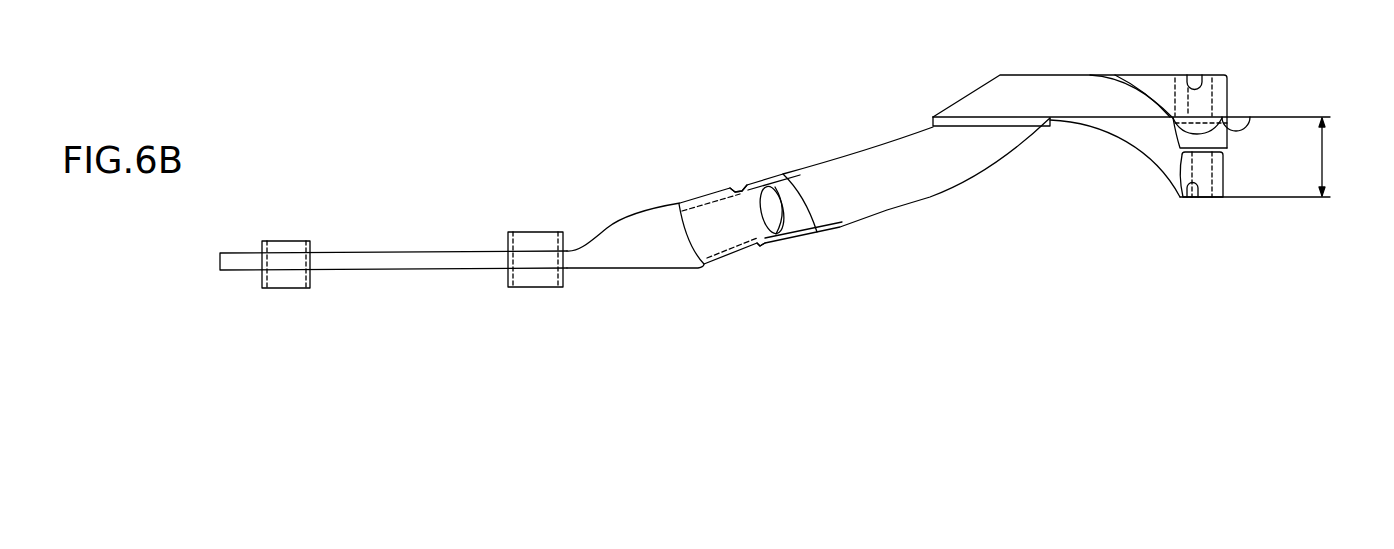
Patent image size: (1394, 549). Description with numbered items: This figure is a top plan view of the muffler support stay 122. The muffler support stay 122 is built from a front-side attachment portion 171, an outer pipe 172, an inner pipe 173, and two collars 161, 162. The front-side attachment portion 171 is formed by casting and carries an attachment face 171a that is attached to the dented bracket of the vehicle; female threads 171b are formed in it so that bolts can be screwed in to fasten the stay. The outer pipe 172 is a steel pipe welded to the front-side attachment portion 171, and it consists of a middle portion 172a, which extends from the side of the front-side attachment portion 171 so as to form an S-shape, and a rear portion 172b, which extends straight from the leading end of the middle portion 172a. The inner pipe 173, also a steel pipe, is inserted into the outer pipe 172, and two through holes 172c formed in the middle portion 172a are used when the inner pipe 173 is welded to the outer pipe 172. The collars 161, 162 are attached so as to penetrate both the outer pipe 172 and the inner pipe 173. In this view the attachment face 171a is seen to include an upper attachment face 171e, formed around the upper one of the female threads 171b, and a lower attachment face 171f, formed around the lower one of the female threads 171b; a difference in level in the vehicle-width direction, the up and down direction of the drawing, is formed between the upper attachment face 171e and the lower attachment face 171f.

The muffler support stay 122 is at (615, 155).
The collar 161 is at (537, 282).
The collar 162 is at (290, 285).
The front-side attachment portion 171 is at (1145, 151).
The attachment face 171a is at (1228, 205).
The female thread 171b is at (1197, 72).
The upper attachment face 171e is at (1207, 198).
The lower attachment face 171f is at (1245, 113).
The outer pipe 172 is at (635, 187).
The middle portion 172a is at (888, 207).
The rear portion 172b is at (400, 260).
The through hole 172c is at (733, 187).
The inner pipe 173 is at (707, 210).